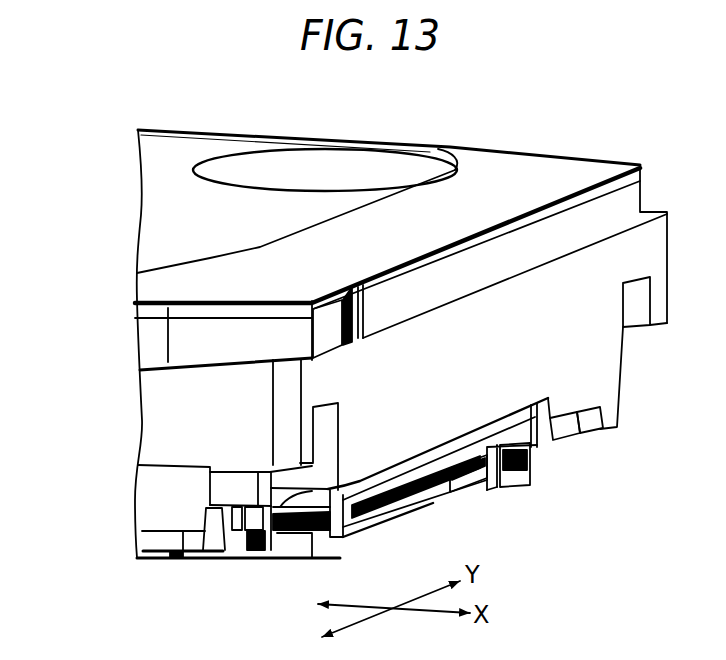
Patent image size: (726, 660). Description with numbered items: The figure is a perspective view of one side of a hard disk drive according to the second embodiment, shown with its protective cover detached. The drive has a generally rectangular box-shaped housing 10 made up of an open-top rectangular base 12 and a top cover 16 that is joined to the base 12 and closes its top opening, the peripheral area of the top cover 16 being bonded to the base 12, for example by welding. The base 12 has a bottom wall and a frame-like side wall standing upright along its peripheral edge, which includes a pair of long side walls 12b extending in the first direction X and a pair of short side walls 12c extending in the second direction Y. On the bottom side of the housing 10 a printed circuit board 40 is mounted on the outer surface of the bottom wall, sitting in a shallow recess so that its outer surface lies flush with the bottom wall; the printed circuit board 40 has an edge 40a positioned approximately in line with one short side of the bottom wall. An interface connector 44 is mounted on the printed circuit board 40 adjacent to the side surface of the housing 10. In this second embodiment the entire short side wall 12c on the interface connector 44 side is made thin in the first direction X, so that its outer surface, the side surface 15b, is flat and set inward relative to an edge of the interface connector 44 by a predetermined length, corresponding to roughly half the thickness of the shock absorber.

The housing 10 is at (481, 132).
The base 12 is at (127, 352).
The long side wall 12b is at (173, 411).
The short side wall 12c is at (580, 348).
The side surface 15b is at (523, 373).
The top cover 16 is at (237, 150).
The printed circuit board 40 is at (238, 545).
The edge 40a is at (541, 470).
The interface connector 44 is at (440, 476).